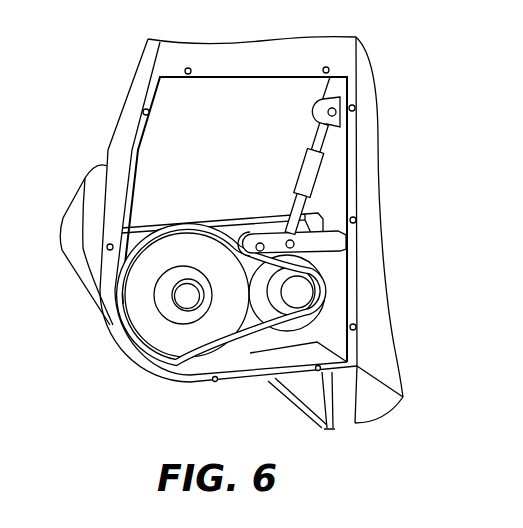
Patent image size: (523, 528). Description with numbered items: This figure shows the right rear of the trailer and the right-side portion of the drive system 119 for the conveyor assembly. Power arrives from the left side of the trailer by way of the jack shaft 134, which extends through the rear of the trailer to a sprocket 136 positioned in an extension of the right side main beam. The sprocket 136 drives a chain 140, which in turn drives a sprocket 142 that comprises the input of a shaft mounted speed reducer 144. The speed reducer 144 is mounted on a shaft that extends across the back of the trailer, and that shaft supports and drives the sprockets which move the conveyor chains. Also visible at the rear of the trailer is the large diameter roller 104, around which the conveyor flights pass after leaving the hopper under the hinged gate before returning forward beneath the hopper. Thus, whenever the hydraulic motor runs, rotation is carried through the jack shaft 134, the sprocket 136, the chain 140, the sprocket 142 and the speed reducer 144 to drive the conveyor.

The large diameter roller 104 is at (75, 248).
The drive system 119 is at (229, 243).
The jack shaft 134 is at (303, 296).
The sprocket 136 is at (288, 254).
The chain 140 is at (182, 233).
The sprocket 142 is at (142, 307).
The shaft mounted speed reducer 144 is at (147, 349).